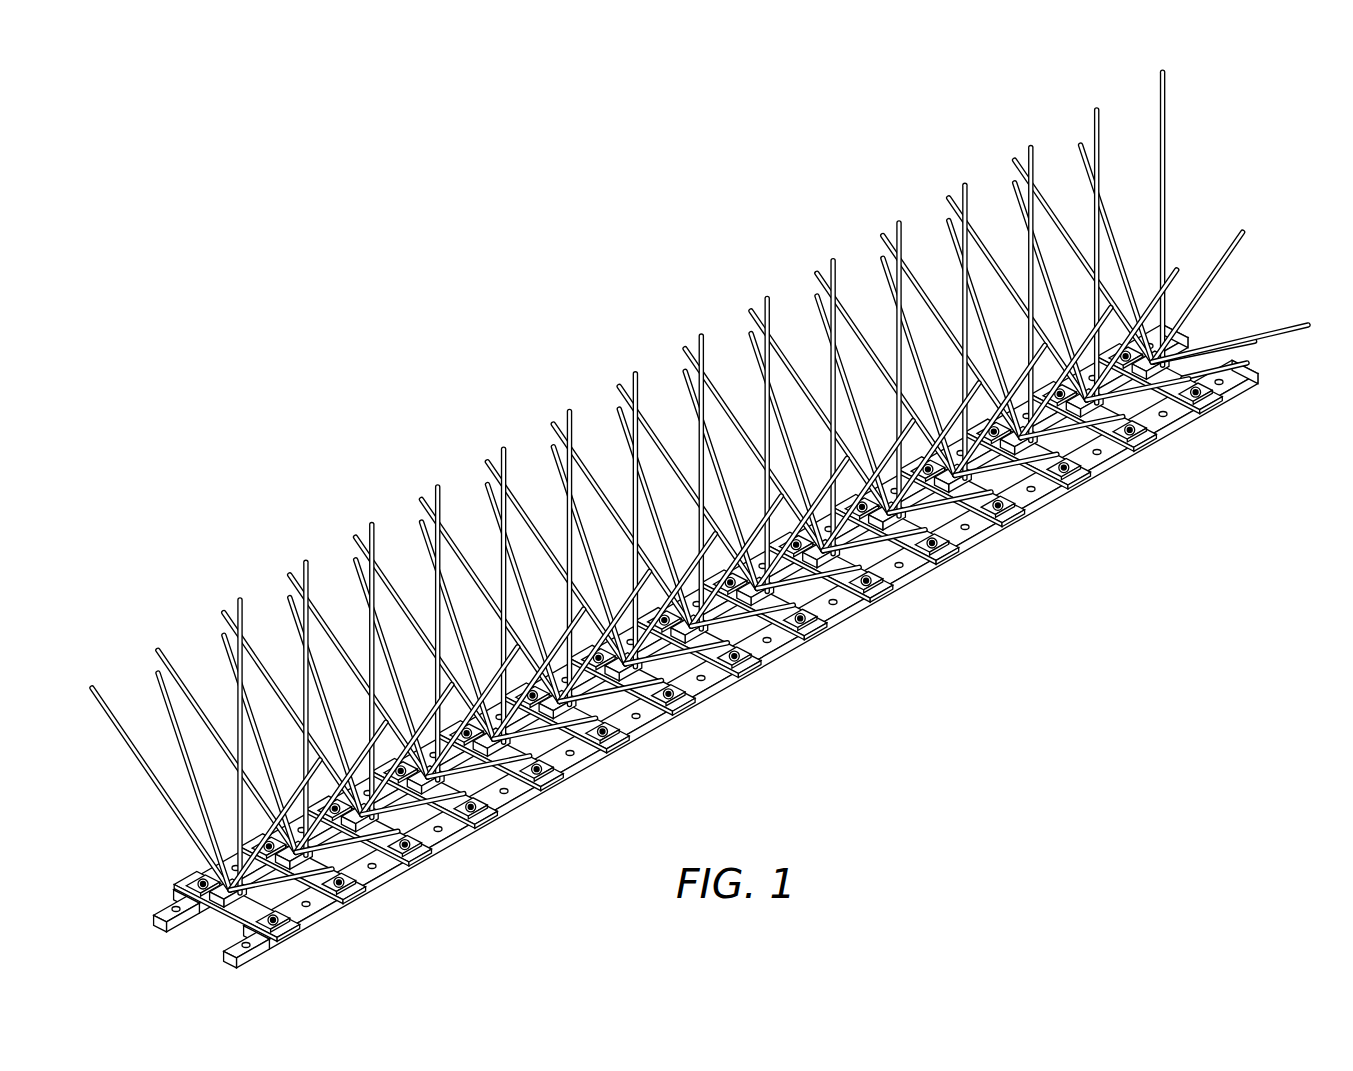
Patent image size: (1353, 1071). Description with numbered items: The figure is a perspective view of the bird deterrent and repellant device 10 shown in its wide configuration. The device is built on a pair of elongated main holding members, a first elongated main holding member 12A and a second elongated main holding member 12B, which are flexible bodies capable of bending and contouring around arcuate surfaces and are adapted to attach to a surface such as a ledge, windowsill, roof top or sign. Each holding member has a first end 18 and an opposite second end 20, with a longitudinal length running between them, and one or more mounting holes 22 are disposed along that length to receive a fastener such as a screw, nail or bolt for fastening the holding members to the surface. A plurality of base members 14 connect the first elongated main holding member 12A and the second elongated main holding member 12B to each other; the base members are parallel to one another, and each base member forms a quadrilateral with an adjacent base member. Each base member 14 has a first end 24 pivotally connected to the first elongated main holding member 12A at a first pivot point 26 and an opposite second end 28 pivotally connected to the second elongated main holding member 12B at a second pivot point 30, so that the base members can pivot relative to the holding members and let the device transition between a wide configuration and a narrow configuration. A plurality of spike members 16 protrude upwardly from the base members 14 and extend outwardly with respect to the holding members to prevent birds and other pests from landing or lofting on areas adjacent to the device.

The bird deterrent and repellant device 10 is at (546, 306).
The first elongated main holding member 12A is at (168, 908).
The second elongated main holding member 12B is at (258, 957).
The base member 14 is at (237, 912).
The spike member 16 is at (96, 688).
The first end 18 is at (160, 924).
The second end 20 is at (1172, 328).
The mounting hole 22 is at (186, 888).
The first end 24 is at (200, 889).
The first pivot point 26 is at (212, 884).
The second end 28 is at (282, 934).
The second pivot point 30 is at (300, 930).